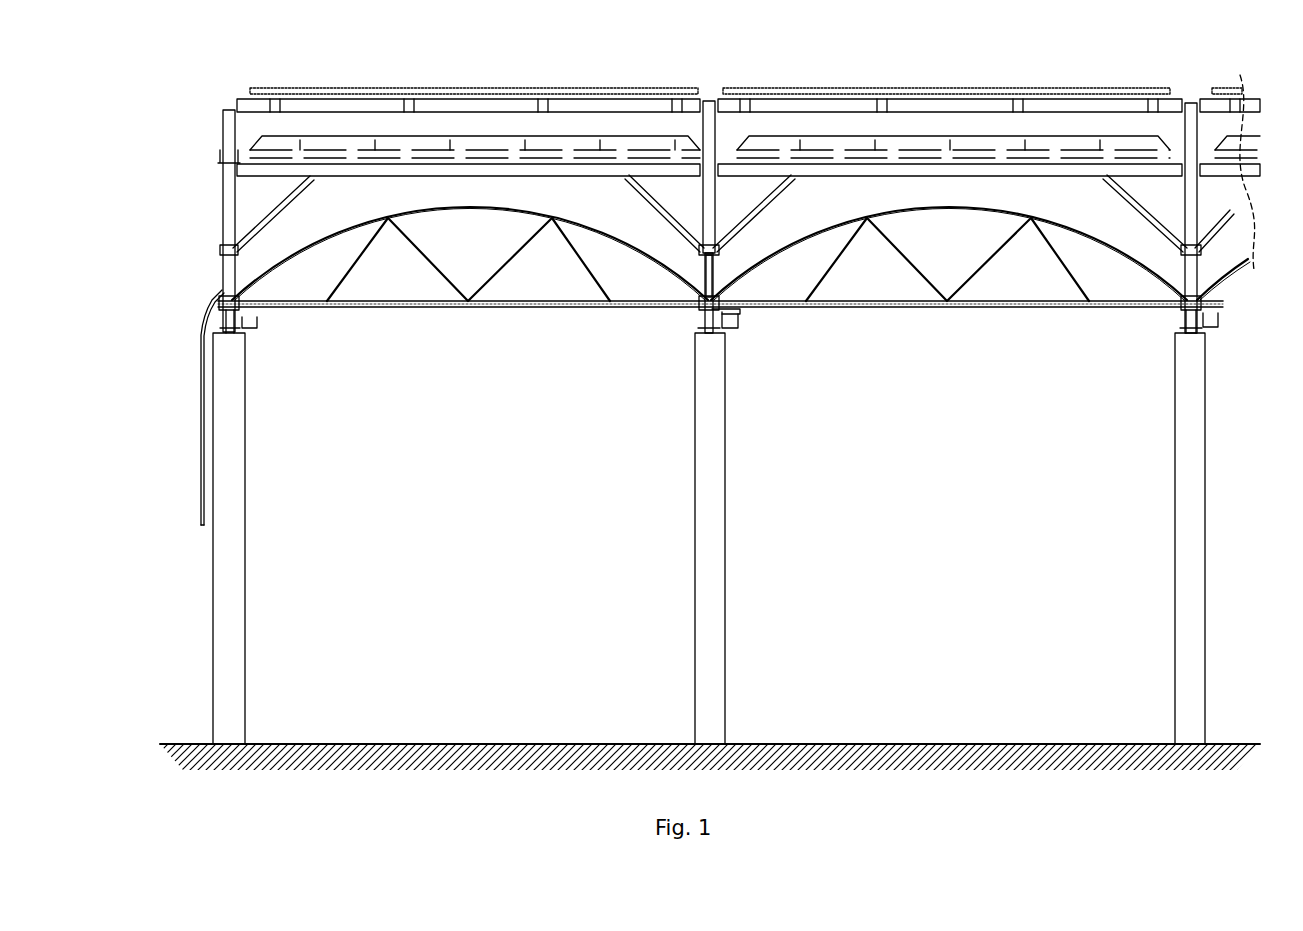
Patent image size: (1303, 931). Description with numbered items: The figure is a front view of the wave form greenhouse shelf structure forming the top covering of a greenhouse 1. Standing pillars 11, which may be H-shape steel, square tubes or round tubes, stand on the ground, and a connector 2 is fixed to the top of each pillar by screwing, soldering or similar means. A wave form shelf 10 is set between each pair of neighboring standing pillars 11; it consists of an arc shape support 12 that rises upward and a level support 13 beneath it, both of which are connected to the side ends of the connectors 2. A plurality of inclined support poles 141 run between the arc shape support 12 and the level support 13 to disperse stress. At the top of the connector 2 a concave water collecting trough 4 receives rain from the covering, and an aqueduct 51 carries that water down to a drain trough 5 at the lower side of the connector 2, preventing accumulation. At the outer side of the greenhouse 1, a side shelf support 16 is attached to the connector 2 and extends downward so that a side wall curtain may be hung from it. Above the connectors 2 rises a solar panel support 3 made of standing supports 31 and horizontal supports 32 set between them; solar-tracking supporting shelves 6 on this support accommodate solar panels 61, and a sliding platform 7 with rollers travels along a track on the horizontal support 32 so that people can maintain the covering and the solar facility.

The greenhouse 1 is at (176, 298).
The connector 2 is at (246, 310).
The solar panel support 3 is at (686, 217).
The standing support 31 is at (230, 197).
The horizontal support 32 is at (268, 172).
The water collecting trough 4 is at (716, 272).
The drain trough 5 is at (740, 323).
The aqueduct 51 is at (732, 314).
The solar-tracking supporting shelf 6 is at (230, 118).
The solar panel 61 is at (290, 88).
The sliding platform 7 is at (283, 153).
The wave form shelf 10 is at (316, 237).
The standing pillar 11 is at (712, 518).
The arc shape support 12 is at (590, 229).
The level support 13 is at (400, 306).
The support pole 141 is at (520, 262).
The side shelf support 16 is at (201, 440).